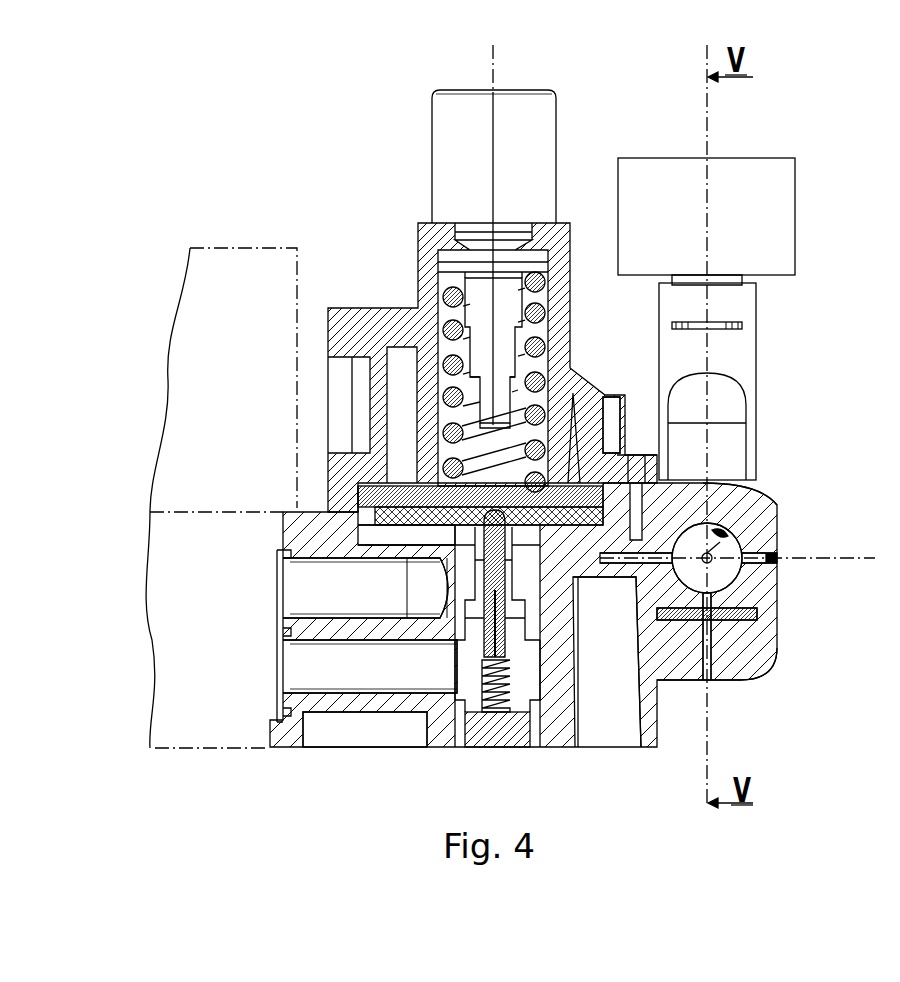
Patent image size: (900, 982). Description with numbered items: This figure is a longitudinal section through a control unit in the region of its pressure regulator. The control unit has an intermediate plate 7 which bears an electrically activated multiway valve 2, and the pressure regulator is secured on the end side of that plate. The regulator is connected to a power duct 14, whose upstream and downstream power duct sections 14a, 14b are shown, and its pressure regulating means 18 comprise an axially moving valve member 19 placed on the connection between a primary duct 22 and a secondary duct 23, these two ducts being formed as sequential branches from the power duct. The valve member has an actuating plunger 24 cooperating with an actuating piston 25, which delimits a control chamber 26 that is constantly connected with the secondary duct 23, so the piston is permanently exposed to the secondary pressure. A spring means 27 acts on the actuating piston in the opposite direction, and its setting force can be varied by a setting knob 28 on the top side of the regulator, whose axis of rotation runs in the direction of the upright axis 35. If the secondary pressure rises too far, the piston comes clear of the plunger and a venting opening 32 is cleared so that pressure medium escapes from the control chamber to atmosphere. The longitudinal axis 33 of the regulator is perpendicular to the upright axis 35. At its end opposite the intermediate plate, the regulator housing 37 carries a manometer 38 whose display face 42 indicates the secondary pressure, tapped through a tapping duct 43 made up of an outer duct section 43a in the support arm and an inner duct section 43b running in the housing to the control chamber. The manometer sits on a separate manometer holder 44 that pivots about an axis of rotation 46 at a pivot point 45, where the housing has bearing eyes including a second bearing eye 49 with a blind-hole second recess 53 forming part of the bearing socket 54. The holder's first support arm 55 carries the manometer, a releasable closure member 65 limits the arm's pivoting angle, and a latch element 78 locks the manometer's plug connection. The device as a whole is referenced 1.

The fuel injection device 1 is at (640, 130).
The multiway valve 2 is at (252, 236).
The intermediate plate 7 is at (226, 748).
The power duct 14 is at (298, 665).
The power duct section 14a is at (370, 724).
The power duct section 14b is at (296, 588).
The pressure regulating means 18 is at (545, 683).
The valve member 19 is at (530, 640).
The primary duct 22 is at (362, 720).
The secondary duct 23 is at (300, 582).
The actuating plunger 24 is at (573, 596).
The actuating piston 25 is at (404, 483).
The control chamber 26 is at (387, 537).
The spring means 27 is at (540, 308).
The setting knob 28 is at (540, 128).
The venting opening 32 is at (575, 412).
The longitudinal axis 33 is at (870, 553).
The upright axis 35 is at (493, 64).
The regulator housing 37 is at (735, 645).
The manometer 38 is at (775, 204).
The display face 42 is at (762, 158).
The tapping duct 43 is at (745, 663).
The outer duct section 43a is at (714, 628).
The inner duct section 43b is at (651, 566).
The manometer holder 44 is at (737, 360).
The pivot point 45 is at (775, 577).
The axis of rotation 46 is at (738, 543).
The second bearing eye 49 is at (762, 505).
The second recess 53 is at (774, 485).
The bearing socket 54 is at (722, 532).
The first support arm 55 is at (726, 397).
The closure member 65 is at (760, 631).
The latch element 78 is at (738, 322).